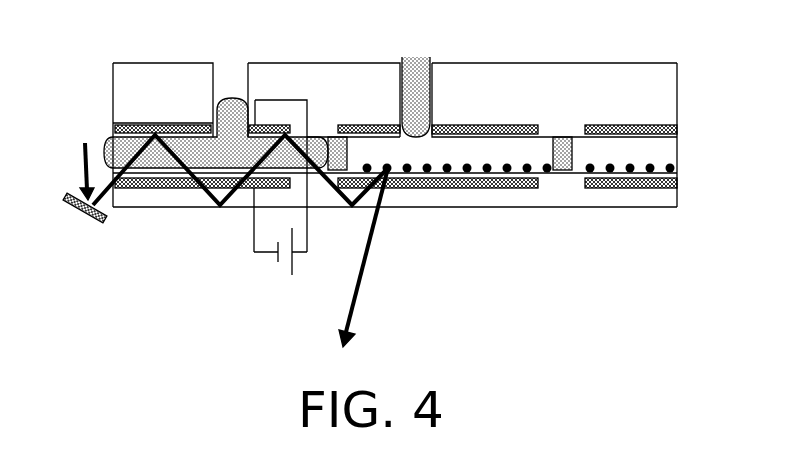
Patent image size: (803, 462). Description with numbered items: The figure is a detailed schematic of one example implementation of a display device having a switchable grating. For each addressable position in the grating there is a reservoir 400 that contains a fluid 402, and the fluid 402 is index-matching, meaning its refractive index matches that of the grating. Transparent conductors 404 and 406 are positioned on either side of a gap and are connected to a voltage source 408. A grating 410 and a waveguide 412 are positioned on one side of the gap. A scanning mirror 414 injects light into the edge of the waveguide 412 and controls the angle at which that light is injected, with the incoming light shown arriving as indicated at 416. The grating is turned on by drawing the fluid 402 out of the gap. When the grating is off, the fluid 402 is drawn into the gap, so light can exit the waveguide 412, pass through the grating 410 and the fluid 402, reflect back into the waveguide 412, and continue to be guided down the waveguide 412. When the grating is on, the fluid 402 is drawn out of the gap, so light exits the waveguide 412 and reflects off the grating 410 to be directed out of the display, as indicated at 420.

The reservoir 400 is at (227, 66).
The fluid 402 is at (417, 53).
The transparent conductor 404 is at (667, 126).
The transparent conductor 406 is at (677, 182).
The voltage source 408 is at (255, 254).
The grating 410 is at (673, 158).
The waveguide 412 is at (512, 193).
The scanning mirror 414 is at (72, 188).
The incident light 416 is at (103, 147).
The light directed out of the display 420 is at (358, 288).